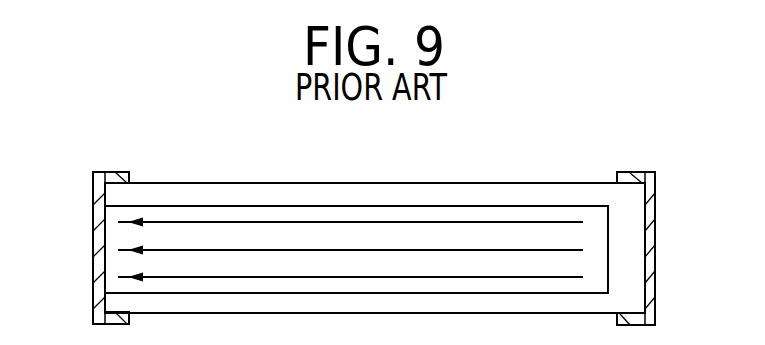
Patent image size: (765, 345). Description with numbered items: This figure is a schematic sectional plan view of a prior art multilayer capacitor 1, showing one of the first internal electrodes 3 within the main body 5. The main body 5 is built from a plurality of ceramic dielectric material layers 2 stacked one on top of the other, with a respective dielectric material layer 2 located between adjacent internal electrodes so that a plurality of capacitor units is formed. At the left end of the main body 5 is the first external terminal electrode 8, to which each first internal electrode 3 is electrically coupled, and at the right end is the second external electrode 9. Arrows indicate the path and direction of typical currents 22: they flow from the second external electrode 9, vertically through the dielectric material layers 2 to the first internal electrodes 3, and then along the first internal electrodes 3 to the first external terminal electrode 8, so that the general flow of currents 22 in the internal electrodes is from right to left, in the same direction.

The multilayer capacitor 1 is at (102, 122).
The ceramic dielectric material layer 2 is at (575, 305).
The first internal electrode 3 is at (440, 205).
The main body 5 is at (569, 170).
The first external terminal electrode 8 is at (93, 248).
The second external electrode 9 is at (655, 243).
The currents 22 is at (320, 248).